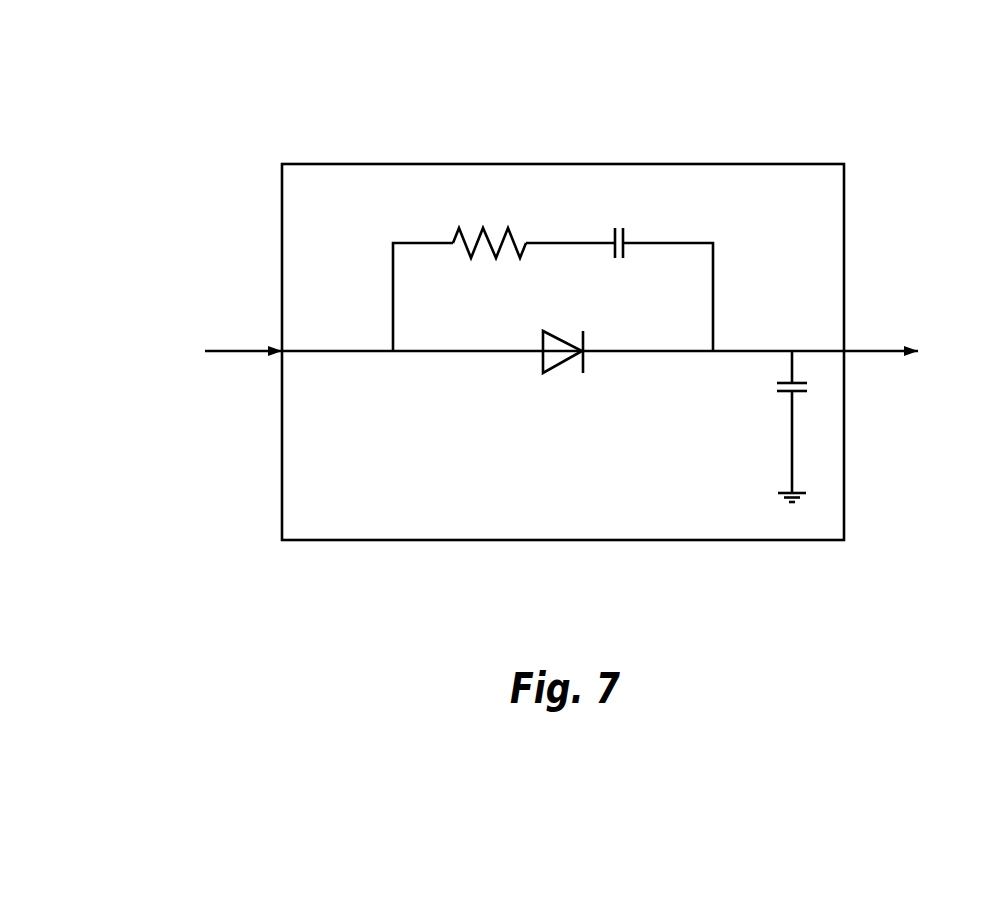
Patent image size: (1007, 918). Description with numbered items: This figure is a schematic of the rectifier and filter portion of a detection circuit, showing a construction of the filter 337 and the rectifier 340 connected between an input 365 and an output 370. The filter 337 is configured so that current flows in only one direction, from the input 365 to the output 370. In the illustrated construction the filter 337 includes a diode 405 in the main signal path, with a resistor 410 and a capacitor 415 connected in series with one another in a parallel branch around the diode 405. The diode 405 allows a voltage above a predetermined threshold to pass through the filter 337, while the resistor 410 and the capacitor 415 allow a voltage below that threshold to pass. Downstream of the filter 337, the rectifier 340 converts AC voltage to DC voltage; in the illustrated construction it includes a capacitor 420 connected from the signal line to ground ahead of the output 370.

The filter 337 is at (563, 194).
The rectifier 340 is at (636, 361).
The input 365 is at (227, 310).
The output 370 is at (890, 296).
The diode 405 is at (476, 418).
The resistor 410 is at (420, 172).
The capacitor 415 is at (693, 155).
The capacitor 420 is at (739, 441).